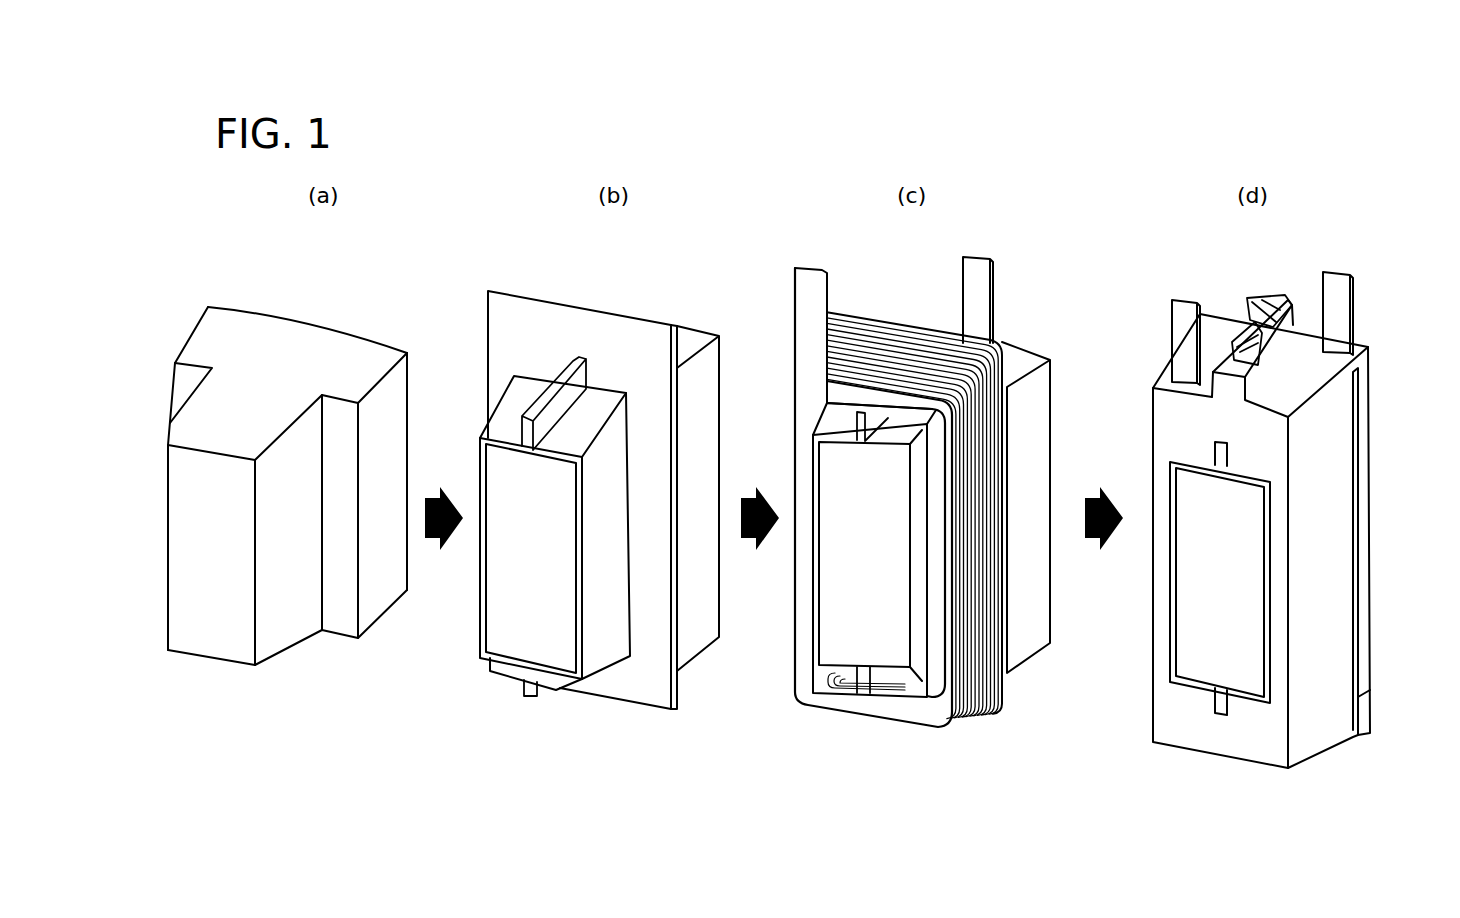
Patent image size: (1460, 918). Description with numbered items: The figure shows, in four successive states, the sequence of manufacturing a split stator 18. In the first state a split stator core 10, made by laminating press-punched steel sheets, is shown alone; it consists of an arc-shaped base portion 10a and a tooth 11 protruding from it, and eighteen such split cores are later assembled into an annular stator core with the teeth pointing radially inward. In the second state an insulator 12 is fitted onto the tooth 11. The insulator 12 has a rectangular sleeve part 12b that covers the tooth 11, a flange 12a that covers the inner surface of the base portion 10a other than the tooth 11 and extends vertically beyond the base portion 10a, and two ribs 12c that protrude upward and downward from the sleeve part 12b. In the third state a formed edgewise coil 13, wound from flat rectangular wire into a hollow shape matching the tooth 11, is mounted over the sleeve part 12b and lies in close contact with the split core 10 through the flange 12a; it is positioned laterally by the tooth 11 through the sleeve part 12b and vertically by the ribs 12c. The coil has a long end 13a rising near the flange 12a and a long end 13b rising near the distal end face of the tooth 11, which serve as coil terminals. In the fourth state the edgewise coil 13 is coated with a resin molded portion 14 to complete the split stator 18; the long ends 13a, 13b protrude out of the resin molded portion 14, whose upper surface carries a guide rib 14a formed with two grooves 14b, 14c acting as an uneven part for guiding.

The split stator core 10 is at (327, 332).
The arc-shaped base portion 10a is at (208, 335).
The tooth 11 is at (495, 645).
The insulator 12 is at (681, 500).
The flange 12a is at (652, 690).
The rectangular sleeve part 12b is at (603, 662).
The rib 12c is at (527, 427).
The edgewise coil 13 is at (985, 592).
The long end 13a is at (975, 270).
The long end 13b is at (808, 282).
The resin molded portion 14 is at (1315, 743).
The guide rib 14a is at (1218, 383).
The groove 14b is at (1242, 343).
The groove 14c is at (1263, 315).
The split stator 18 is at (1272, 517).